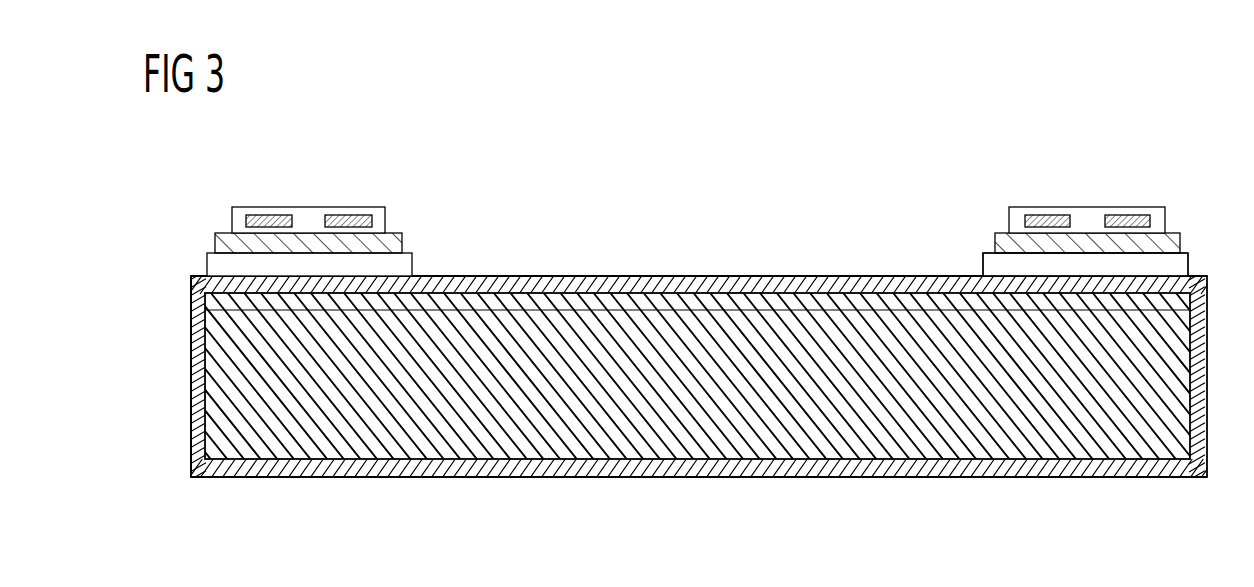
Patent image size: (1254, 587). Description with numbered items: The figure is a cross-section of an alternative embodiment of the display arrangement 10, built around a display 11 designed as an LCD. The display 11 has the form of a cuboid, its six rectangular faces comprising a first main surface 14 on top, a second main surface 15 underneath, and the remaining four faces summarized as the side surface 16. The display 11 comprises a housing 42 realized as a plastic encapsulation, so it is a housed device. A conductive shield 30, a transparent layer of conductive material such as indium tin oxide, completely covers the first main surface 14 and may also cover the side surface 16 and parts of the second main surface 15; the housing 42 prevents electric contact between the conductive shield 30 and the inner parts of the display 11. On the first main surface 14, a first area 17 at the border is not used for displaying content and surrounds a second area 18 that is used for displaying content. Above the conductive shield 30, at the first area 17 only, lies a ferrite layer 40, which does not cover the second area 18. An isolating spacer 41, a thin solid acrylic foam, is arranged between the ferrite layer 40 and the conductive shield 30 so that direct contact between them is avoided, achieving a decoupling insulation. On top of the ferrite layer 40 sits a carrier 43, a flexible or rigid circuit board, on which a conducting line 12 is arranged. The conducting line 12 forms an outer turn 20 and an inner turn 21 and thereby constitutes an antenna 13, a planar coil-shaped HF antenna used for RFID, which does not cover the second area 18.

The display arrangement 10 is at (757, 162).
The display 11 is at (1218, 276).
The conducting line 12 is at (698, 166).
The antenna 13 is at (1112, 120).
The first main surface 14 is at (737, 276).
The second main surface 15 is at (722, 478).
The side surface 16 is at (191, 358).
The first area 17 is at (307, 311).
The second area 18 is at (698, 311).
The outer turn 20 is at (270, 214).
The inner turn 21 is at (697, 191).
The conductive shield 30 is at (565, 276).
The ferrite layer 40 is at (396, 246).
The isolating spacer 41 is at (213, 263).
The housing 42 is at (660, 292).
The carrier 43 is at (380, 220).